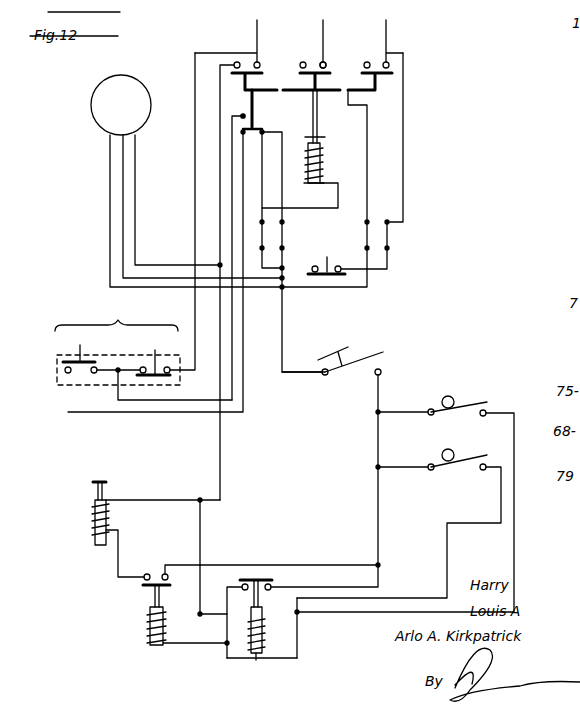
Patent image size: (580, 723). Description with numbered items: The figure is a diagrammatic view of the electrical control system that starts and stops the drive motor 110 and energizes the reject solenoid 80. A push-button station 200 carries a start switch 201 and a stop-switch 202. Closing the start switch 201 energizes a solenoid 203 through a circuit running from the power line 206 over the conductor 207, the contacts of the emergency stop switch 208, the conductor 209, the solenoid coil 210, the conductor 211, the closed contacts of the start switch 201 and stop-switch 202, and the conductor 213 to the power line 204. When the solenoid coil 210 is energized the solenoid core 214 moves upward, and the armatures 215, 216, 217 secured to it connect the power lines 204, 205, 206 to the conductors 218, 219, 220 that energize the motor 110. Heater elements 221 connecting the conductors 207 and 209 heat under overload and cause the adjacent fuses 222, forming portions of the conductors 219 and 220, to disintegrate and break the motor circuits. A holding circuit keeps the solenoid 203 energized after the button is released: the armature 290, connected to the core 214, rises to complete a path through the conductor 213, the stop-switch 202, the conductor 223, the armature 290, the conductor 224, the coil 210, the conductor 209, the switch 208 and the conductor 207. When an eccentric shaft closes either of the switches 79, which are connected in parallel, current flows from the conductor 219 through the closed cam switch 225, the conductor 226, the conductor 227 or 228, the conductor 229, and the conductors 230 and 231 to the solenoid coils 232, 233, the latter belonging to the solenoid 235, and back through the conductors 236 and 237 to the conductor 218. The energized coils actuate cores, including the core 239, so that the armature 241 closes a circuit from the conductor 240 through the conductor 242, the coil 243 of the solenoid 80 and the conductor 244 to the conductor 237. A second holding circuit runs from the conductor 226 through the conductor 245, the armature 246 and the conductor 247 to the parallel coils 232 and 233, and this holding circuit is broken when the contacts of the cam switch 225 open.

The drive motor 110 is at (97, 123).
The push-button station 200 is at (117, 347).
The start switch 201 is at (82, 378).
The stop-switch 202 is at (160, 380).
The solenoid 203 is at (322, 134).
The power line 204 is at (258, 30).
The power line 205 is at (324, 30).
The power line 206 is at (387, 30).
The conductor 207 is at (404, 140).
The emergency stop switch 208 is at (346, 276).
The conductor 209 is at (326, 210).
The solenoid coil 210 is at (322, 160).
The conductor 211 is at (246, 169).
The conductor 213 is at (195, 193).
The solenoid core 214 is at (310, 184).
The armature 215 is at (262, 69).
The armature 216 is at (330, 69).
The armature 217 is at (394, 72).
The conductor 218 is at (217, 85).
The conductor 219 is at (282, 174).
The conductor 220 is at (110, 246).
The heater elements 221 is at (262, 222).
The fuses 222 is at (284, 235).
The conductor 223 is at (150, 402).
The conductor 224 is at (258, 126).
The cam switch 225 is at (365, 352).
The conductor 226 is at (376, 392).
The conductor 227 is at (405, 414).
The conductor 228 is at (395, 469).
The conductor 229 is at (298, 641).
The conductor 230 is at (205, 644).
The conductor 231 is at (240, 660).
The solenoid coil 232 is at (150, 632).
The solenoid coil 233 is at (265, 628).
The solenoid 235 is at (274, 656).
The conductor 236 is at (203, 530).
The conductor 237 is at (222, 468).
The core 239 is at (258, 656).
The conductor 240 is at (343, 563).
The armature 241 is at (145, 588).
The conductor 242 is at (118, 560).
The coil 243 is at (108, 513).
The conductor 244 is at (165, 500).
The conductor 245 is at (380, 583).
The armature 246 is at (273, 578).
The conductor 247 is at (227, 598).
The armature 290 is at (232, 126).
The switches 79 is at (480, 397).
The solenoid 80 is at (88, 521).